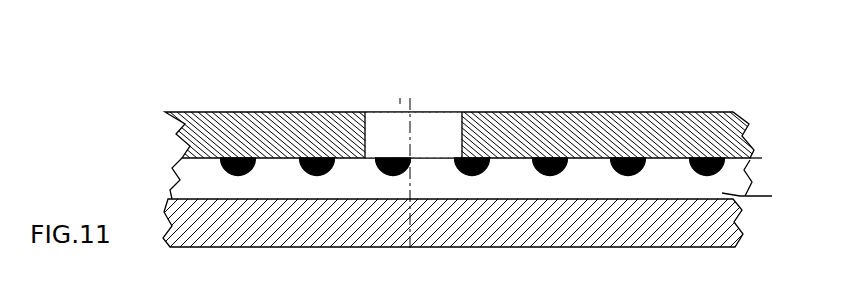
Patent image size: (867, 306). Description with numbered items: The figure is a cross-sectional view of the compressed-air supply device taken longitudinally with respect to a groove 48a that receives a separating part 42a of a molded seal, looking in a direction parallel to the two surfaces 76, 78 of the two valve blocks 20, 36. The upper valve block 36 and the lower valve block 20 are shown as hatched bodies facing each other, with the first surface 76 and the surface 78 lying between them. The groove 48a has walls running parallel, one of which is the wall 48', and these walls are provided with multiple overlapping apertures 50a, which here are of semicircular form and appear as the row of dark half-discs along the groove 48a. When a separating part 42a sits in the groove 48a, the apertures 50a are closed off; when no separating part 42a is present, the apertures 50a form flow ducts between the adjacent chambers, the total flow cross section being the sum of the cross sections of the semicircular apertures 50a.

The valve block 36 is at (735, 129).
The apertures 50a is at (239, 157).
The separating part 42a is at (318, 157).
The surface 78 is at (755, 167).
The first surface 76 is at (772, 196).
The valve block 20 is at (716, 232).
The groove 48a is at (160, 182).
The wall 48' is at (341, 193).